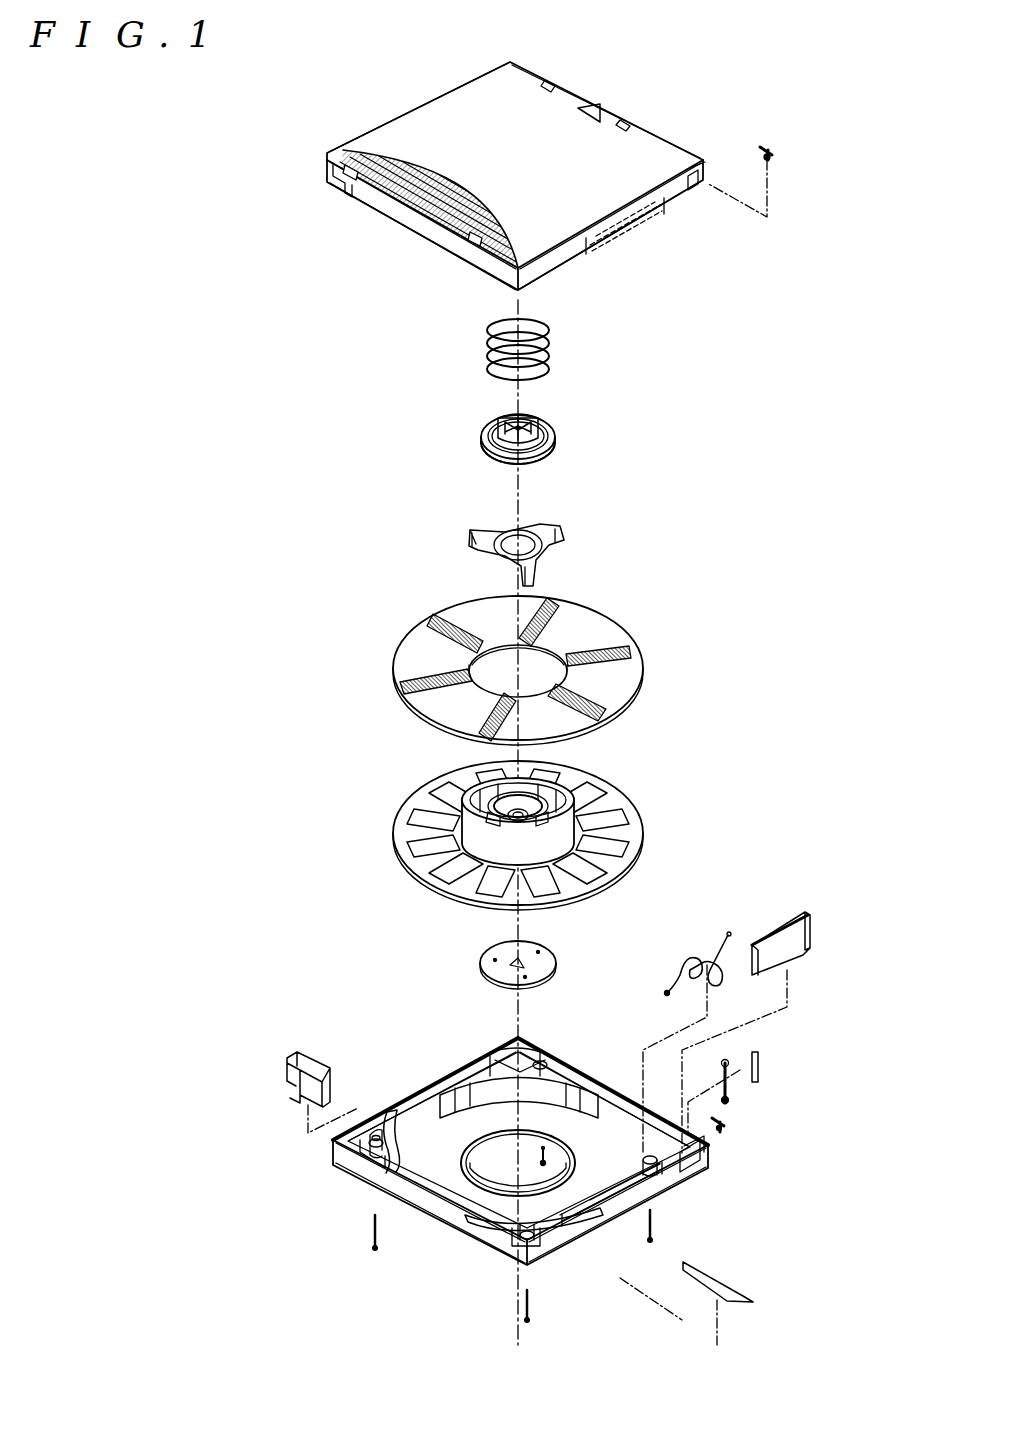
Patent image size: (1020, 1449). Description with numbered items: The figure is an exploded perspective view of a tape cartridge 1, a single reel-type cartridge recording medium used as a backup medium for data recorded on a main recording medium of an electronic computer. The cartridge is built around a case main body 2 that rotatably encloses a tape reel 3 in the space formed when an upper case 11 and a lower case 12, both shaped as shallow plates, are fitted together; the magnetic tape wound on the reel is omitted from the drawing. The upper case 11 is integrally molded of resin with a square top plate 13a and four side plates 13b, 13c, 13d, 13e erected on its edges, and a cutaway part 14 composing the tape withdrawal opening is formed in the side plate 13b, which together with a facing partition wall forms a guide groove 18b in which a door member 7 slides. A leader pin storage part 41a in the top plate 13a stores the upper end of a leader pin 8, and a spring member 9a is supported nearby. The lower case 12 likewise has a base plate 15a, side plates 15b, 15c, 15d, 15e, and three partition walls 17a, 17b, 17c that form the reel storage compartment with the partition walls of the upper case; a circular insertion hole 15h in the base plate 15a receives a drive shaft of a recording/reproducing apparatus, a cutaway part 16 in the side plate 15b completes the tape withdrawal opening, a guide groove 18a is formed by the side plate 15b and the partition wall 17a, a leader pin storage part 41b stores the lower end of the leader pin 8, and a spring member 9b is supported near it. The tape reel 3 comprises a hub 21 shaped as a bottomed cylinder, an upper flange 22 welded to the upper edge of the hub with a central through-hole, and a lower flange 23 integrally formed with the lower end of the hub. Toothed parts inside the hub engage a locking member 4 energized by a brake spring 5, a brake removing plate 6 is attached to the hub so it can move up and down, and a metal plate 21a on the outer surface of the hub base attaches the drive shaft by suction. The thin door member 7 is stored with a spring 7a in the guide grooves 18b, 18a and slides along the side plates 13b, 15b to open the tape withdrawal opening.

The tape cartridge 1 is at (370, 82).
The case main body 2 is at (363, 1062).
The tape reel 3 is at (378, 1018).
The locking member 4 is at (557, 436).
The brake spring 5 is at (551, 348).
The brake removing plate 6 is at (561, 535).
The door member 7 is at (785, 956).
The spring 7a is at (728, 976).
The leader pin 8 is at (736, 1100).
The spring member 9a is at (769, 153).
The spring member 9b is at (731, 1130).
The upper case 11 is at (633, 118).
The lower case 12 is at (372, 1170).
The top plate 13a is at (662, 160).
The side plate 13b is at (565, 262).
The side plate 13c is at (381, 206).
The side plate 13d is at (382, 120).
The side plate 13e is at (578, 88).
The cutaway part 14 is at (692, 206).
The base plate 15a is at (455, 1127).
The side plate 15b is at (598, 1223).
The side plate 15c is at (452, 1222).
The side plate 15d is at (422, 1100).
The side plate 15e is at (577, 1078).
The insertion hole 15h is at (478, 1072).
The cutaway part 16 is at (692, 1192).
The partition wall 17a is at (492, 1208).
The partition wall 17b is at (418, 1148).
The partition wall 17c is at (500, 1160).
The guide groove 18a is at (614, 1194).
The guide groove 18b is at (628, 233).
The hub 21 is at (486, 850).
The metal plate 21a is at (490, 963).
The upper flange 22 is at (452, 614).
The lower flange 23 is at (452, 777).
The leader pin storage part 41a is at (680, 192).
The leader pin storage part 41b is at (710, 1178).